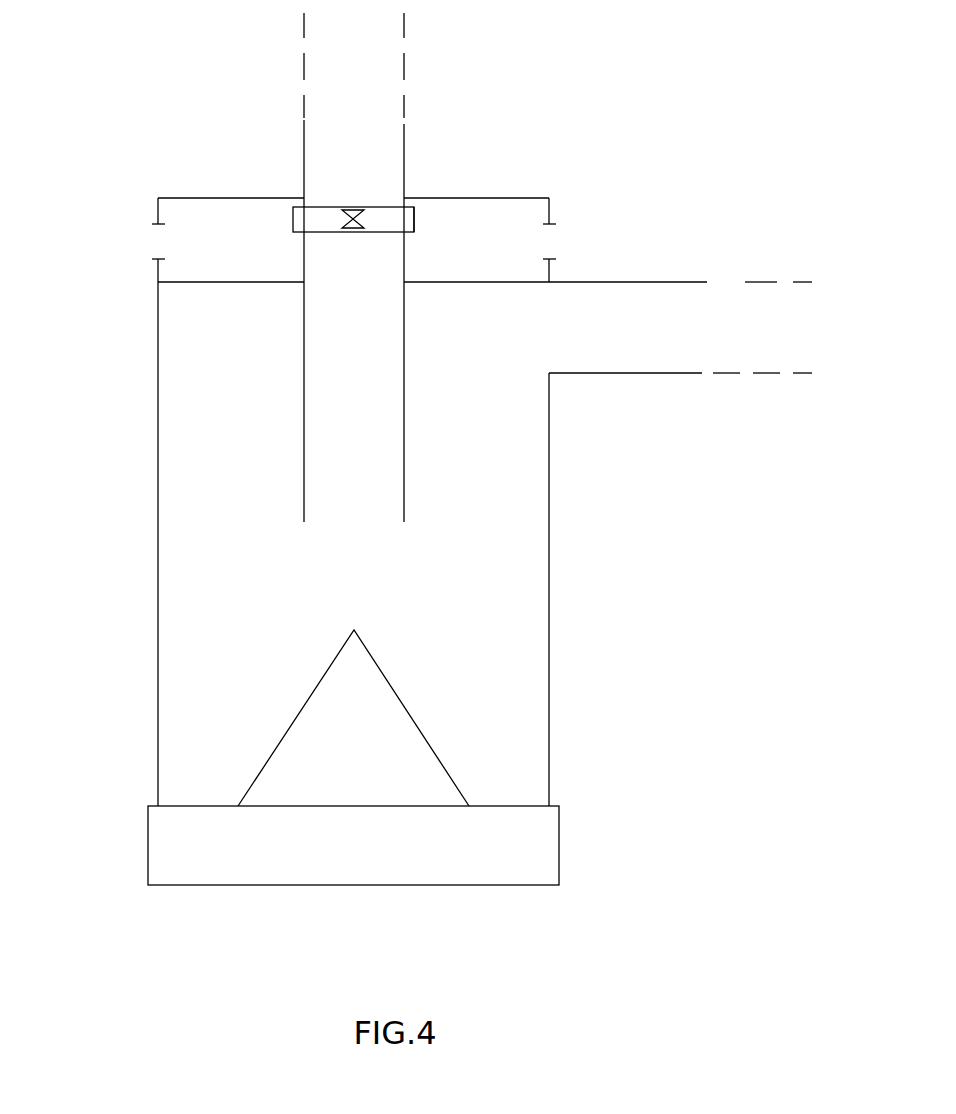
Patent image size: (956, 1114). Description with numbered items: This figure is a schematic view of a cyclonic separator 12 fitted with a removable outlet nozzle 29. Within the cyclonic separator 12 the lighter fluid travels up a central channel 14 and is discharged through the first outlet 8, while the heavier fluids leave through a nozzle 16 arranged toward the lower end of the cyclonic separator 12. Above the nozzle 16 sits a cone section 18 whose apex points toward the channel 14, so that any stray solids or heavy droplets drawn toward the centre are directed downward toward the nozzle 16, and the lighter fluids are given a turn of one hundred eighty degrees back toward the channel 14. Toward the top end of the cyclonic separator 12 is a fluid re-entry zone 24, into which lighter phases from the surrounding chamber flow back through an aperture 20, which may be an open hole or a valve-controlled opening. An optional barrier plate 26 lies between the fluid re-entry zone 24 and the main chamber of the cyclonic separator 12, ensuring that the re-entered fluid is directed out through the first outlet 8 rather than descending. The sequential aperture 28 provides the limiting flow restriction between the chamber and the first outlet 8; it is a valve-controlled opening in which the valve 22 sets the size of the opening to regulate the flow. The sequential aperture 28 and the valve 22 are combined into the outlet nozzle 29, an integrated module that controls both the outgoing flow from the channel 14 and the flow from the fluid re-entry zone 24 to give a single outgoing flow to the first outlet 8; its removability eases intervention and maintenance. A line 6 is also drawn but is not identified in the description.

The mounting surface 6 is at (667, 281).
The first outlet 8 is at (404, 132).
The cyclonic separator 12 is at (683, 642).
The channel 14 is at (304, 475).
The nozzle 16 is at (210, 852).
The cone section 18 is at (285, 730).
The aperture 20 is at (157, 238).
The valve 22 is at (356, 210).
The fluid re-entry zone 24 is at (525, 213).
The barrier plate 26 is at (217, 282).
The sequential aperture 28 is at (307, 217).
The outlet nozzle 29 is at (400, 222).